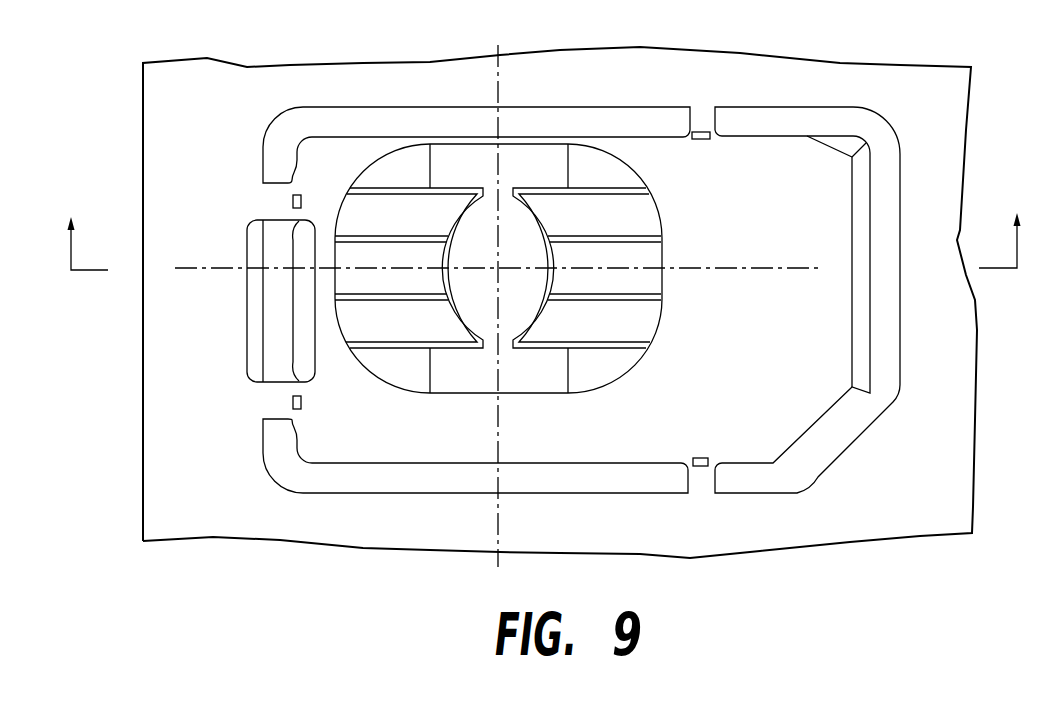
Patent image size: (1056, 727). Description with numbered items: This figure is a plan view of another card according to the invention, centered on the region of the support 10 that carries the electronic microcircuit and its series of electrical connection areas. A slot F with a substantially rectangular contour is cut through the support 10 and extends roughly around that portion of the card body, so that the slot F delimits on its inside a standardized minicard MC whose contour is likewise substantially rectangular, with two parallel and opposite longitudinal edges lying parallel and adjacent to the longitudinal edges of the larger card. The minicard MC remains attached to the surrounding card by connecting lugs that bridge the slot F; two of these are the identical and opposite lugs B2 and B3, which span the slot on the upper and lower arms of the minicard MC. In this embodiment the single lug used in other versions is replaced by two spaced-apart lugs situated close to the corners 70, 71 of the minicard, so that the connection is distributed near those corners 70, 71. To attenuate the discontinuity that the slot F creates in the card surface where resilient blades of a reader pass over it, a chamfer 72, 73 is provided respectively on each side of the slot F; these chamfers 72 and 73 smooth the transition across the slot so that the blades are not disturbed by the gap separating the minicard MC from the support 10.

The support 10 is at (544, 227).
The corner of the minicard 70 is at (297, 457).
The corner of the minicard 71 is at (295, 133).
The chamfer 72 is at (303, 343).
The chamfer 73 is at (255, 247).
The slot F is at (270, 318).
The lug B2 is at (700, 118).
The lug B3 is at (698, 478).
The minicard MC is at (832, 226).